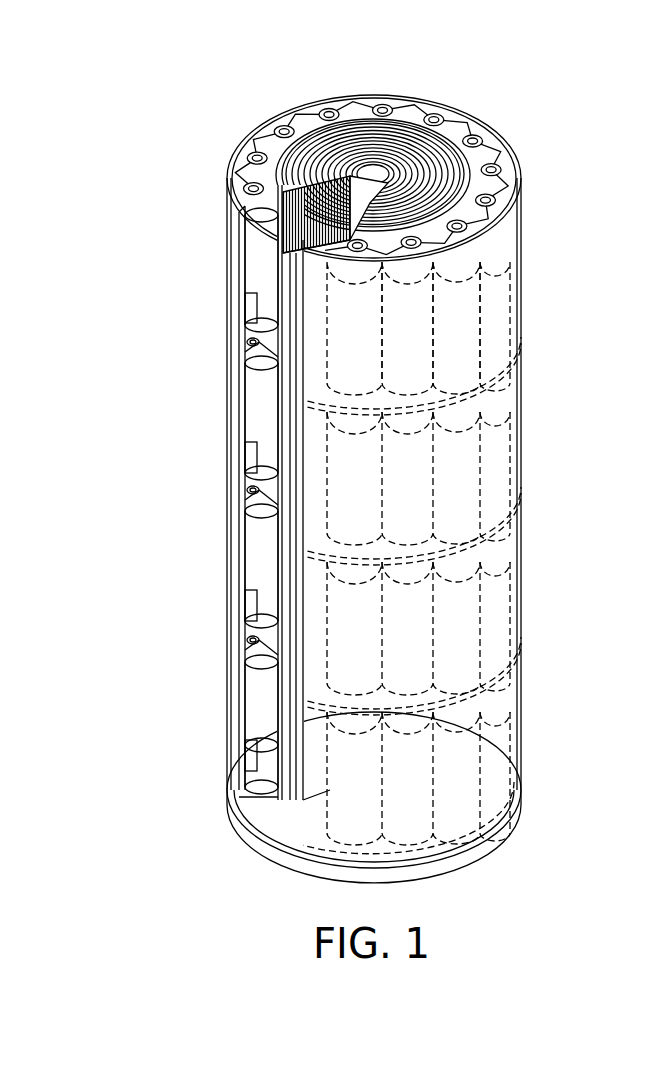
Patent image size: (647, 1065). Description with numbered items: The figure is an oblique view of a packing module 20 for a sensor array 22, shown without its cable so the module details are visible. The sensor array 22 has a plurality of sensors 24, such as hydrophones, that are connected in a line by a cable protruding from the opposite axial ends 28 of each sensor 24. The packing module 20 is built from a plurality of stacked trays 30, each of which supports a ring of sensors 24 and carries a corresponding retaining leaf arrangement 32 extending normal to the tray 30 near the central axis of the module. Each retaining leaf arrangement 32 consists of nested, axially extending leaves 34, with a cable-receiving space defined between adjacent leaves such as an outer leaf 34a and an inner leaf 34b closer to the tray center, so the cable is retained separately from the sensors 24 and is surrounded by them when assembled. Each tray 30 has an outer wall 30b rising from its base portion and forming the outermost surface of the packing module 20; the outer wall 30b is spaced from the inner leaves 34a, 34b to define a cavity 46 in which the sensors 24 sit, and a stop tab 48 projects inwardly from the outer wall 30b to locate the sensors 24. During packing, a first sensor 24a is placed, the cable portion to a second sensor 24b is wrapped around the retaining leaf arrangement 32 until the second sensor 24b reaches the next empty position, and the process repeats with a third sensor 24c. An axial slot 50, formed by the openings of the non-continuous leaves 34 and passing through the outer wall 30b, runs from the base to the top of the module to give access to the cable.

The packing module 20 is at (190, 146).
The sensor array 22 is at (283, 122).
The sensors 24 is at (468, 273).
The first sensor 24a is at (362, 347).
The second sensor 24b is at (418, 326).
The third sensor 24c is at (448, 313).
The axial ends 28 is at (498, 173).
The tray 30 is at (300, 388).
The outer wall 30b is at (318, 298).
The retaining leaf arrangement 32 is at (440, 160).
The leaves 34 is at (412, 126).
The outer leaf 34a is at (238, 174).
The inner leaf 34b is at (240, 173).
The cavity 46 is at (468, 203).
The stop tab 48 is at (248, 315).
The axial slot 50 is at (278, 244).